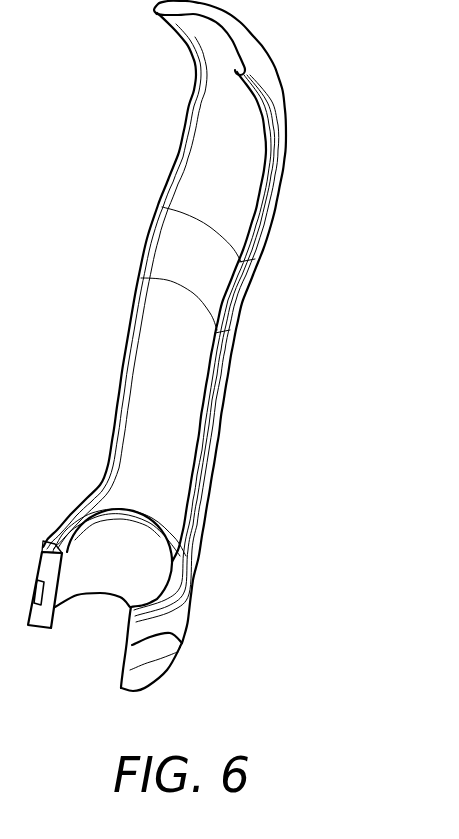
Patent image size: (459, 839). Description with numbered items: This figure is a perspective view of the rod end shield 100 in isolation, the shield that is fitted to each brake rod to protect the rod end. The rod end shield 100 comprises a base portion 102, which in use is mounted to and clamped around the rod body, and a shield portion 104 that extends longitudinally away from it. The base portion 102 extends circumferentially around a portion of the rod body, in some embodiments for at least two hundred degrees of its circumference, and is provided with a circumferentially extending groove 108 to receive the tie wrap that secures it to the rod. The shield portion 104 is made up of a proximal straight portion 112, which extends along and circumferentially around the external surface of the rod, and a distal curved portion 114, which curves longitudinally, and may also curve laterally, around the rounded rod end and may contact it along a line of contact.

The rod end shield 100 is at (204, 361).
The base portion 102 is at (136, 615).
The shield portion 104 is at (230, 380).
The circumferentially extending groove 108 is at (178, 641).
The proximal straight portion 112 is at (143, 403).
The distal curved portion 114 is at (206, 142).